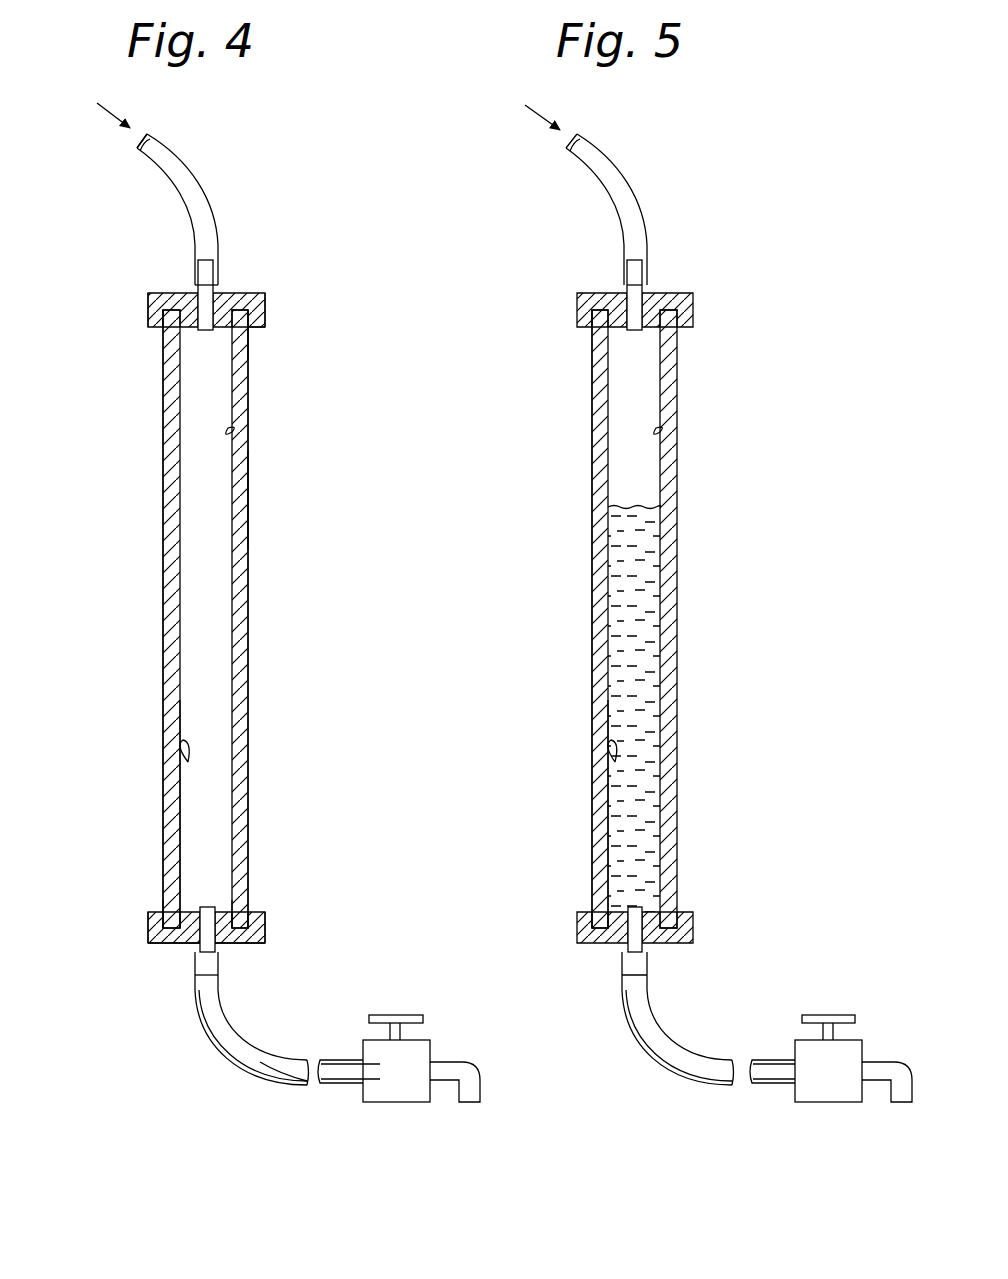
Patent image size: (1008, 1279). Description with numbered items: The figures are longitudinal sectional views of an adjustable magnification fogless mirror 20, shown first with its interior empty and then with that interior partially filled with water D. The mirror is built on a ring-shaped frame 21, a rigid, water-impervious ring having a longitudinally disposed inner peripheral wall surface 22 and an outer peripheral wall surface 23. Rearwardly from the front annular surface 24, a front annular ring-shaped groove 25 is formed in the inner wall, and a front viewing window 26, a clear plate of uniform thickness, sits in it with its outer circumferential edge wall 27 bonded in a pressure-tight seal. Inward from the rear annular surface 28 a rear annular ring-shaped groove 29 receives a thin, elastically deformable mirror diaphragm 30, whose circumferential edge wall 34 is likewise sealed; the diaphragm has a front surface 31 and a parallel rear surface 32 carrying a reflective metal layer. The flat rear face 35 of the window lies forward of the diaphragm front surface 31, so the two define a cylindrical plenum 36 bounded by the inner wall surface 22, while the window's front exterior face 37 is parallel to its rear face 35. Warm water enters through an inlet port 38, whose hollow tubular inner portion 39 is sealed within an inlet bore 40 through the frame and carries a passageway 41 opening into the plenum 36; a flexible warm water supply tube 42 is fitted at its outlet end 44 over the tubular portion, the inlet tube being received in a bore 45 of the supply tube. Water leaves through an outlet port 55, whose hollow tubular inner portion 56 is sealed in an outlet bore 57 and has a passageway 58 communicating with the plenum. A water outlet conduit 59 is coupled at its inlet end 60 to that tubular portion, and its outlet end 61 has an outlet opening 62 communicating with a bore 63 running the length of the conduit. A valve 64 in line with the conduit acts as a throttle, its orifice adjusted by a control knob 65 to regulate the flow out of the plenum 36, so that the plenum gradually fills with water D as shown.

In FIG. 4, the adjustable magnification fogless mirror 20 is at (148, 283).
In FIG. 5, the adjustable magnification fogless mirror 20 is at (588, 283).
In FIG. 4, the ring-shaped frame 21 is at (250, 296).
In FIG. 4, the inner peripheral wall surface 22 is at (265, 915).
In FIG. 4, the outer peripheral wall surface 23 is at (216, 951).
In FIG. 4, the front annular surface 24 is at (148, 310).
In FIG. 4, the front annular ring-shaped groove 25 is at (160, 912).
In FIG. 4, the front viewing window 26 is at (156, 603).
In FIG. 5, the front viewing window 26 is at (590, 598).
In FIG. 4, the outer circumferential edge wall 27 is at (168, 945).
In FIG. 4, the rear annular surface 28 is at (265, 308).
In FIG. 4, the rear annular ring-shaped groove 29 is at (252, 327).
In FIG. 4, the mirror diaphragm 30 is at (260, 659).
In FIG. 5, the mirror diaphragm 30 is at (688, 660).
In FIG. 4, the front surface 31 is at (232, 432).
In FIG. 5, the front surface 31 is at (660, 432).
In FIG. 4, the rear surface 32 is at (250, 497).
In FIG. 4, the circumferential edge wall 34 is at (221, 948).
In FIG. 4, the rear face 35 is at (188, 762).
In FIG. 5, the rear face 35 is at (615, 762).
In FIG. 4, the plenum 36 is at (188, 413).
In FIG. 5, the plenum 36 is at (618, 371).
In FIG. 4, the front exterior face 37 is at (163, 520).
In FIG. 5, the front exterior face 37 is at (592, 520).
In FIG. 4, the inlet port 38 is at (268, 274).
In FIG. 4, the hollow tubular inner portion 39 is at (197, 292).
In FIG. 4, the inlet bore 40 is at (250, 350).
In FIG. 4, the passageway 41 is at (206, 331).
In FIG. 4, the warm water supply tube 42 is at (208, 190).
In FIG. 5, the warm water supply tube 42 is at (640, 195).
In FIG. 4, the outlet end 44 is at (215, 292).
In FIG. 4, the bore 45 is at (140, 139).
In FIG. 4, the outlet port 55 is at (178, 962).
In FIG. 4, the hollow tubular inner portion 56 is at (170, 910).
In FIG. 4, the outlet bore 57 is at (235, 910).
In FIG. 4, the passageway 58 is at (207, 907).
In FIG. 4, the water outlet conduit 59 is at (252, 1050).
In FIG. 5, the water outlet conduit 59 is at (688, 1078).
In FIG. 4, the inlet end 60 is at (221, 955).
In FIG. 4, the outlet end 61 is at (356, 1085).
In FIG. 4, the outlet opening 62 is at (362, 1068).
In FIG. 4, the bore 63 is at (272, 1078).
In FIG. 4, the valve 64 is at (432, 1045).
In FIG. 5, the valve 64 is at (865, 1045).
In FIG. 4, the control knob 65 is at (400, 1015).
In FIG. 5, the control knob 65 is at (832, 1015).
In FIG. 5, the water D is at (620, 705).